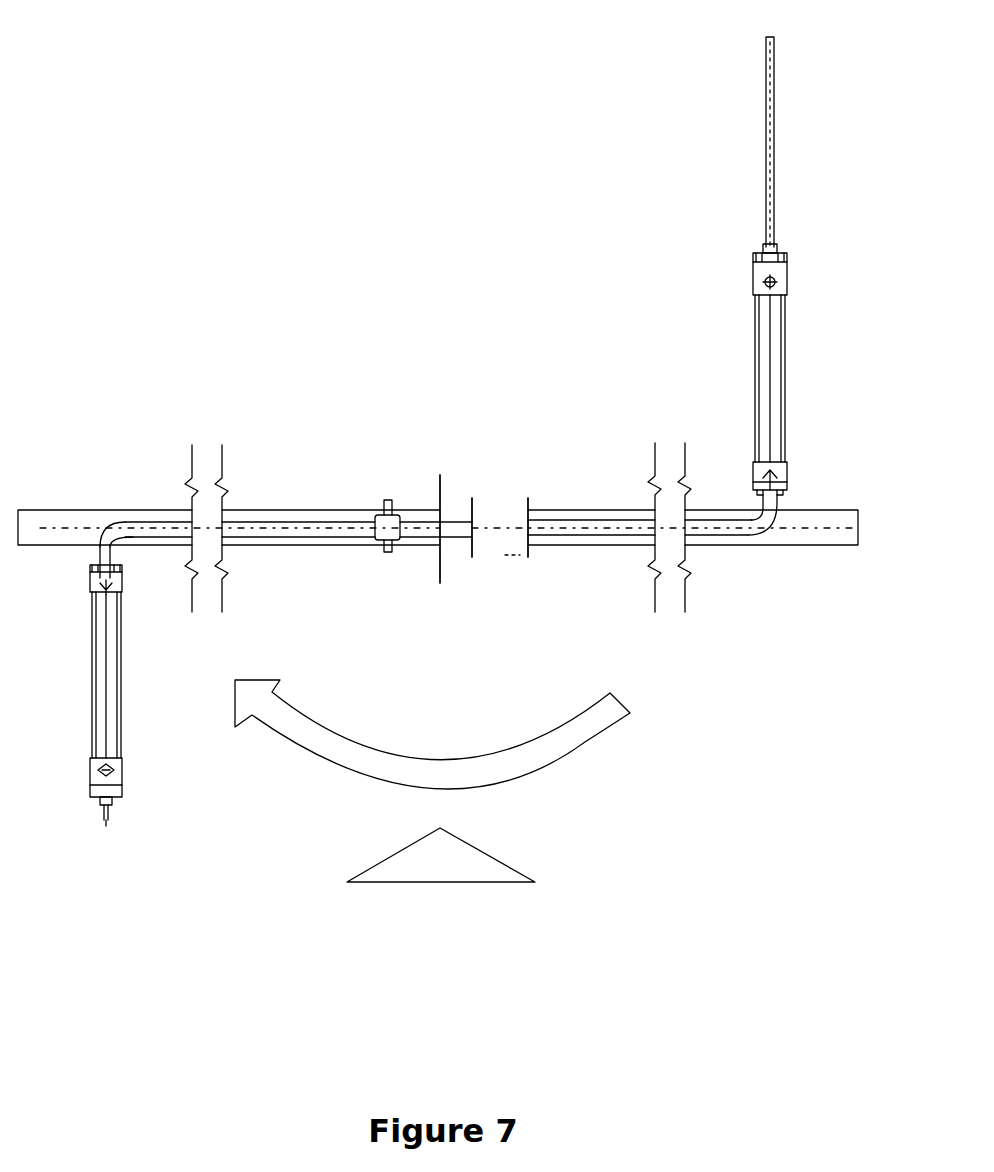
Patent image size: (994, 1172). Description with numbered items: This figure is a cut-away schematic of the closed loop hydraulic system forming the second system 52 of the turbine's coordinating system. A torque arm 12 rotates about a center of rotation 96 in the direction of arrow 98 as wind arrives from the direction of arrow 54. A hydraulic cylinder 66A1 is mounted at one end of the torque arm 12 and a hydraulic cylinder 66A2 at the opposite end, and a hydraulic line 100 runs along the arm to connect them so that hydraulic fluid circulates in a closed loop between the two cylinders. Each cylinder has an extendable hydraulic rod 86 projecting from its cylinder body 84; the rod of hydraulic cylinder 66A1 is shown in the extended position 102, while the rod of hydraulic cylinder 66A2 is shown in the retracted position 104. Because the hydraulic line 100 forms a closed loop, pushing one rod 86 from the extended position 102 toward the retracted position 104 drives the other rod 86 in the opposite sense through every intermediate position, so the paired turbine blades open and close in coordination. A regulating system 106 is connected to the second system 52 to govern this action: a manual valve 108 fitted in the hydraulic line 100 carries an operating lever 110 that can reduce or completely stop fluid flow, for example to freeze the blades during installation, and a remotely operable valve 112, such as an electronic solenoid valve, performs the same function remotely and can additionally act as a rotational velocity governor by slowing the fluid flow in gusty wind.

The torque arm 12 is at (97, 512).
The hydraulic line 100 is at (295, 527).
The manual valve 108 is at (394, 515).
The operating lever 110 is at (384, 500).
The center of rotation 96 is at (445, 525).
The remotely operable valve 112 is at (500, 555).
The hydraulic cylinder 66A2 is at (132, 663).
The hydraulic cylinder 66A1 is at (729, 286).
The cylinder body 84 is at (758, 355).
The extendable hydraulic rod 86 is at (766, 118).
The extended position 102 is at (728, 57).
The second system 52 is at (355, 378).
The regulating system 106 is at (463, 435).
The retracted position 104 is at (122, 823).
The arrow 98 is at (588, 742).
The arrow 54 is at (443, 884).